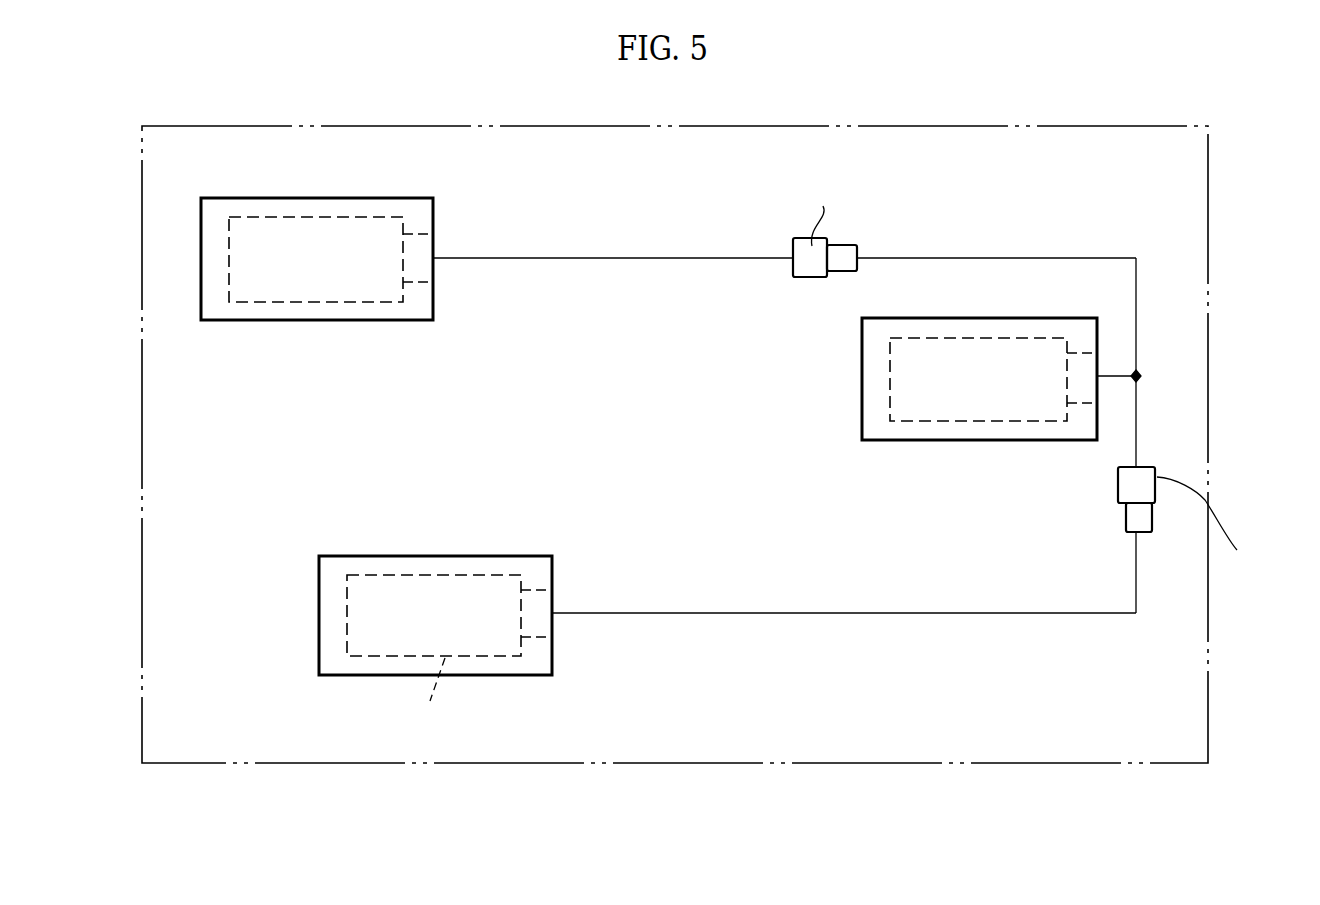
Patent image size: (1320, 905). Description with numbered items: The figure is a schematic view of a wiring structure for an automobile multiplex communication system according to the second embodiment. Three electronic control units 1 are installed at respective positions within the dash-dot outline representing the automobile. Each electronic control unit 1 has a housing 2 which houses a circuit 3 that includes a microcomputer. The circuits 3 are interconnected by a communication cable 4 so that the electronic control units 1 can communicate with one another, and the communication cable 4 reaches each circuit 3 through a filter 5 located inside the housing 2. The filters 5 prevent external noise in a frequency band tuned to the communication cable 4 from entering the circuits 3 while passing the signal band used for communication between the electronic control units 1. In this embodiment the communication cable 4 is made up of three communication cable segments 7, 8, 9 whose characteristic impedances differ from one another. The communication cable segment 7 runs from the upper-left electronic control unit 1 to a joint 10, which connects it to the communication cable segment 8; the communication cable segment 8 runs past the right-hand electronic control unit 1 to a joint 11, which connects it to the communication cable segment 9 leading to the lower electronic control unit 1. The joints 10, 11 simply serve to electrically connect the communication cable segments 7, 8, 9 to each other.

The electronic control unit 1 is at (660, 434).
The housing 2 is at (371, 198).
The circuit 3 is at (293, 301).
The communication cable 4 is at (1030, 242).
The filter 5 is at (410, 233).
The communication cable segment 7 is at (637, 259).
The communication cable segment 8 is at (1072, 258).
The communication cable segment 9 is at (930, 614).
The joint 10 is at (812, 277).
The joint 11 is at (1156, 490).